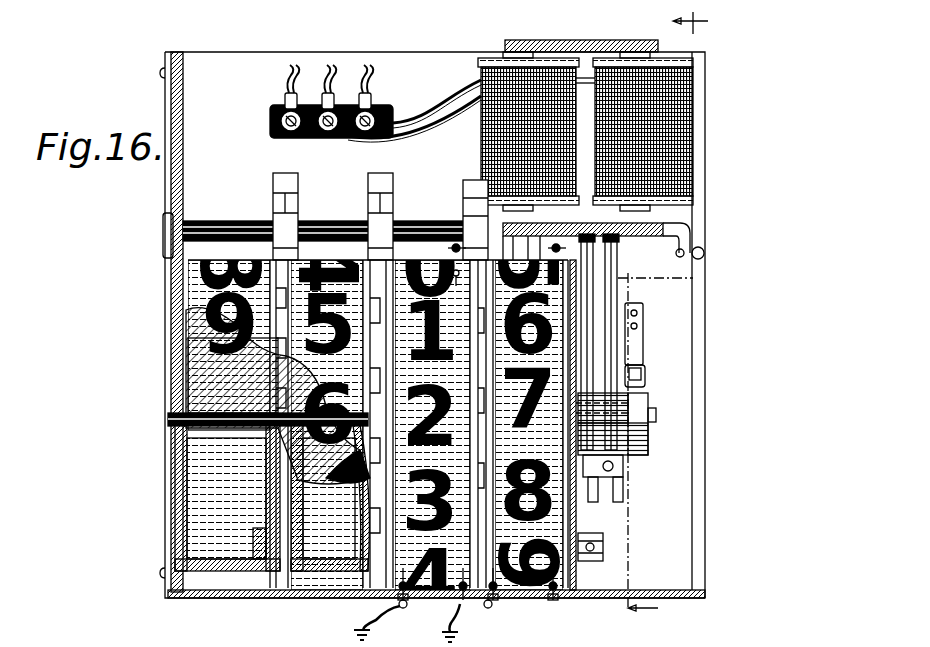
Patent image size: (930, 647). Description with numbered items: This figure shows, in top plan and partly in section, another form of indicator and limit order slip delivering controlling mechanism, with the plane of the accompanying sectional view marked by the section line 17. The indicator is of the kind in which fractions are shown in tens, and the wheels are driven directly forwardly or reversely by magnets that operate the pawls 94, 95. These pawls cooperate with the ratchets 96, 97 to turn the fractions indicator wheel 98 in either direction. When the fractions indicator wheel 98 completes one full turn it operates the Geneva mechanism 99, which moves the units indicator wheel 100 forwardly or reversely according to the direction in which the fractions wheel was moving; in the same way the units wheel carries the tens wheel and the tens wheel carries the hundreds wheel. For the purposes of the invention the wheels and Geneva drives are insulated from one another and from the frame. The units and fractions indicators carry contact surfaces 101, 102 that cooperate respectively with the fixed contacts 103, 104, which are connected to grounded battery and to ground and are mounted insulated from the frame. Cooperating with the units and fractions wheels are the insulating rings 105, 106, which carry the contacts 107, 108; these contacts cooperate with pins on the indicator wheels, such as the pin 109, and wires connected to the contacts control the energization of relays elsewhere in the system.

The section line 17- 17 is at (684, 315).
The pawl 94 is at (583, 338).
The pawl 95 is at (606, 357).
The ratchet 96 is at (597, 398).
The ratchet 97 is at (615, 425).
The fractions indicator wheel 98 is at (565, 506).
The Geneva mechanism 99 is at (462, 190).
The units indicator wheel 100 is at (380, 623).
The contact surface 101 is at (388, 562).
The contact surface 102 is at (480, 563).
The fixed contact 103 is at (385, 594).
The fixed contact 104 is at (496, 592).
The insulating ring 105 is at (452, 598).
The insulating ring 106 is at (548, 592).
The contact 107 is at (444, 240).
The contact 108 is at (546, 240).
The pin 109 is at (448, 278).